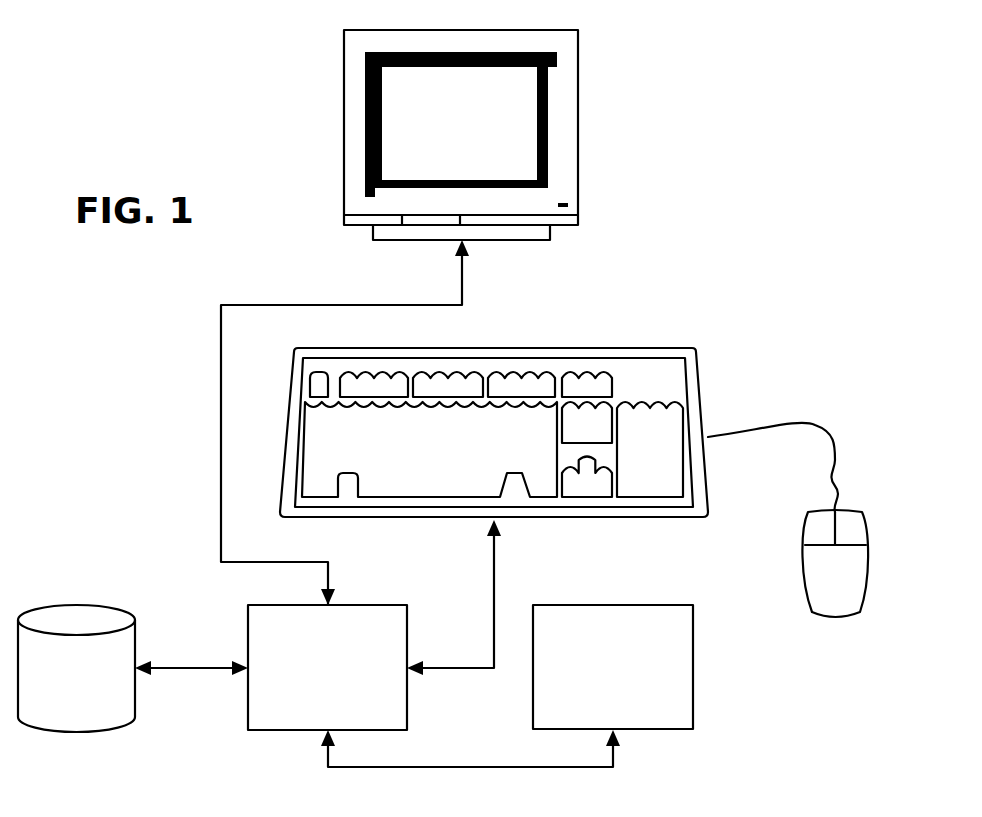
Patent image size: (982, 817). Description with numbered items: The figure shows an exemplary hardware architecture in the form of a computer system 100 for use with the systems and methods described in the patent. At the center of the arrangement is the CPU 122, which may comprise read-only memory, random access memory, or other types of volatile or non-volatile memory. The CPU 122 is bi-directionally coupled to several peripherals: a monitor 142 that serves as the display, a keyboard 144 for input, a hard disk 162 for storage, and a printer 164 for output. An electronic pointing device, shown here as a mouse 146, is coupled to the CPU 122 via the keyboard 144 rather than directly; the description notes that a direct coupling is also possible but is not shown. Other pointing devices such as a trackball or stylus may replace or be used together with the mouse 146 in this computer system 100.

The computer system 100 is at (708, 160).
The monitor 142 is at (437, 147).
The keyboard 144 is at (413, 463).
The mouse 146 is at (810, 588).
The CPU 122 is at (303, 682).
The hard disk 162 is at (52, 688).
The printer 164 is at (587, 683).